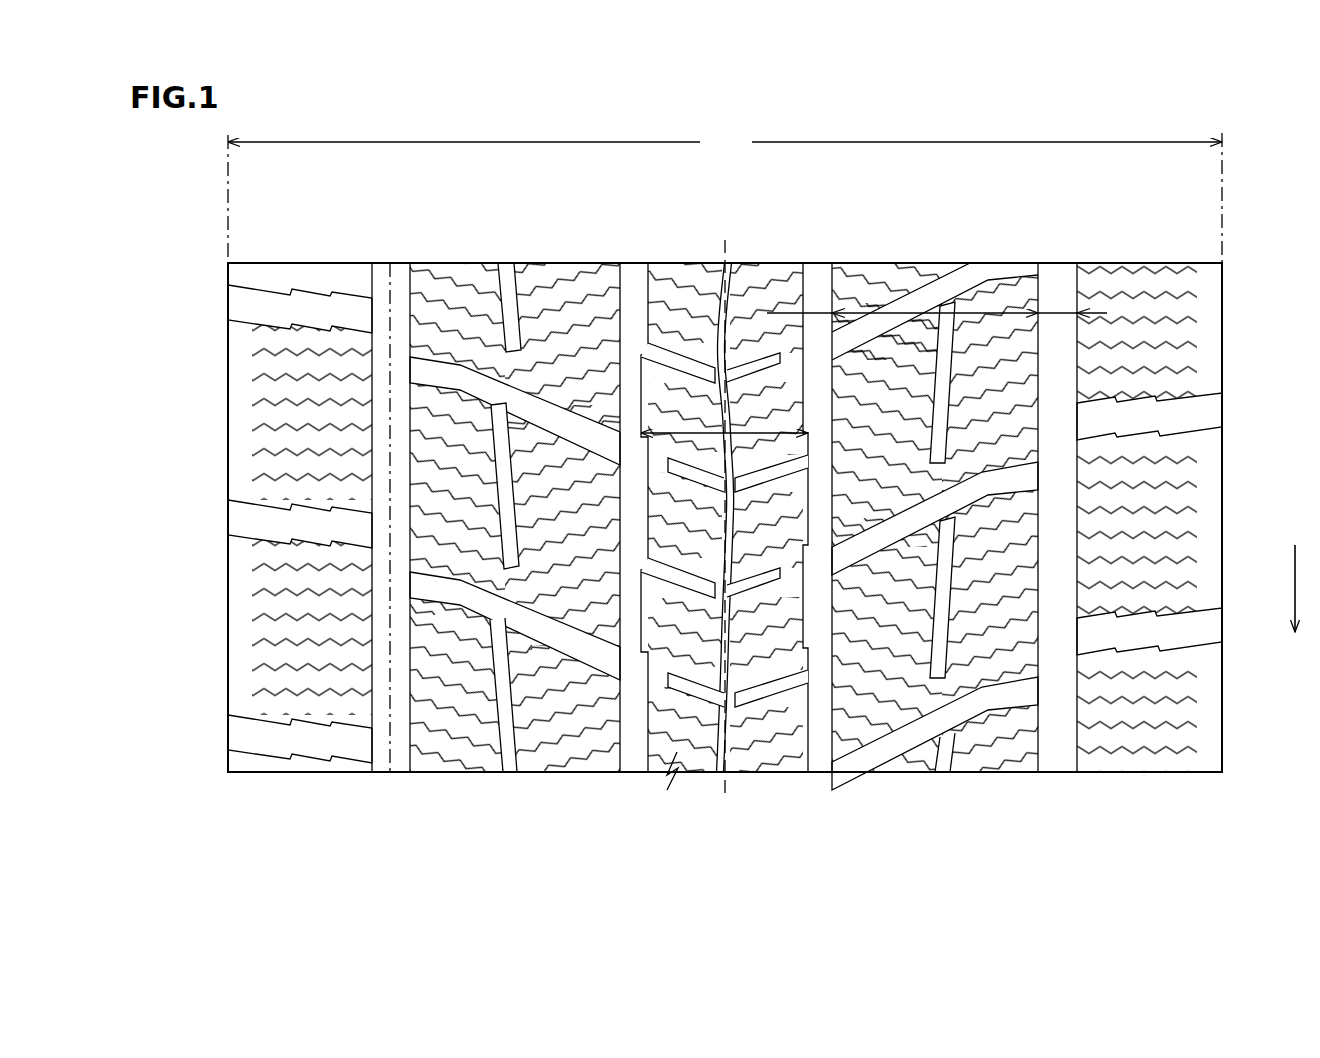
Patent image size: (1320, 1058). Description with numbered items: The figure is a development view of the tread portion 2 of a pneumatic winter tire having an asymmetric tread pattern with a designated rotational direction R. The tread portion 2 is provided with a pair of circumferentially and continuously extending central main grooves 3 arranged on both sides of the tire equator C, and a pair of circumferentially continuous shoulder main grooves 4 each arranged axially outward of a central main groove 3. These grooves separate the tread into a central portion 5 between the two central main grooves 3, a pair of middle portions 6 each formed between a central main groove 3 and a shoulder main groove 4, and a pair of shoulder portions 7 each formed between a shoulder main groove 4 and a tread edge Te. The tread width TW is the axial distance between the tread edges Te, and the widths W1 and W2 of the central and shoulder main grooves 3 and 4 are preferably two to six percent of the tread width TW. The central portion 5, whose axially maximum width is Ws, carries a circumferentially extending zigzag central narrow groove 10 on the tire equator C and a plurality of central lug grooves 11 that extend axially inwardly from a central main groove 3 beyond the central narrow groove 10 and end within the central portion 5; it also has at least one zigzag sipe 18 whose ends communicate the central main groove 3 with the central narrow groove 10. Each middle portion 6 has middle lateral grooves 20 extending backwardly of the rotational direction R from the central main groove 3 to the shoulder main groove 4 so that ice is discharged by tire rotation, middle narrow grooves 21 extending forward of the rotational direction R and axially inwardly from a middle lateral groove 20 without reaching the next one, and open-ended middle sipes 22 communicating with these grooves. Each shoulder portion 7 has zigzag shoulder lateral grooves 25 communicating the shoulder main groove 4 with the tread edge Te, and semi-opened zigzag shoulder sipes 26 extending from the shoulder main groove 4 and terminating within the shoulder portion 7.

The tread portion 2 is at (1238, 172).
The central main groove 3 is at (628, 281).
The shoulder main groove 4 is at (400, 283).
The central portion 5 is at (690, 282).
The middle portion 6 is at (545, 278).
The shoulder portion 7 is at (309, 340).
The central narrow groove 10 is at (731, 710).
The central lug groove 11 is at (767, 683).
The sipe 18 is at (695, 722).
The middle lateral groove 20 is at (437, 372).
The middle narrow groove 21 is at (507, 708).
The middle sipe 22 is at (572, 735).
The shoulder lateral groove 25 is at (265, 519).
The shoulder sipe 26 is at (276, 597).
The tread edge Te is at (227, 271).
The tread width TW is at (725, 142).
The tire equator C is at (722, 504).
The axially maximum width of the central portion Ws is at (748, 430).
The width of the central main groove W1 is at (829, 313).
The width of the shoulder main groove W2 is at (1064, 313).
The rotational direction R is at (1298, 608).